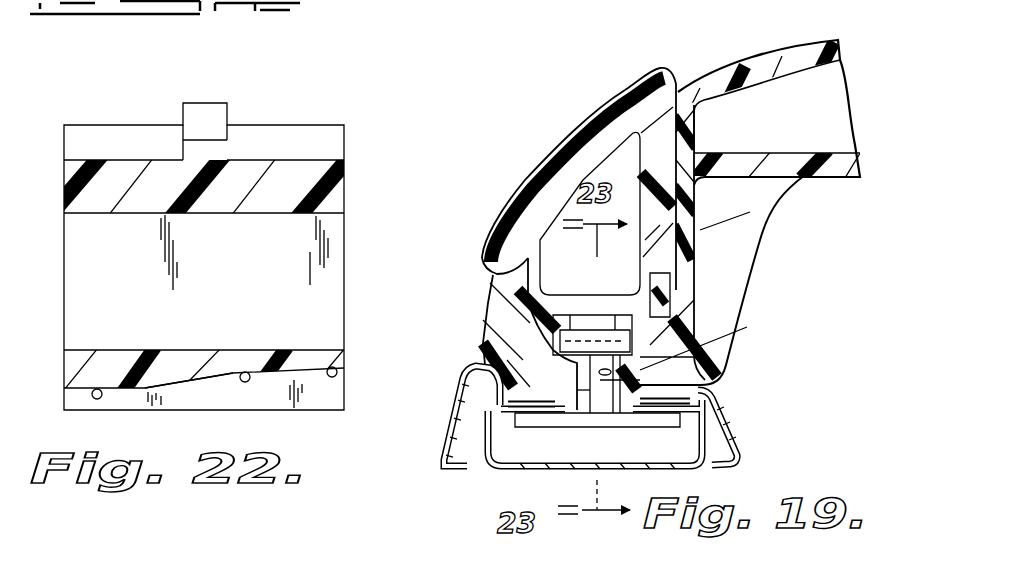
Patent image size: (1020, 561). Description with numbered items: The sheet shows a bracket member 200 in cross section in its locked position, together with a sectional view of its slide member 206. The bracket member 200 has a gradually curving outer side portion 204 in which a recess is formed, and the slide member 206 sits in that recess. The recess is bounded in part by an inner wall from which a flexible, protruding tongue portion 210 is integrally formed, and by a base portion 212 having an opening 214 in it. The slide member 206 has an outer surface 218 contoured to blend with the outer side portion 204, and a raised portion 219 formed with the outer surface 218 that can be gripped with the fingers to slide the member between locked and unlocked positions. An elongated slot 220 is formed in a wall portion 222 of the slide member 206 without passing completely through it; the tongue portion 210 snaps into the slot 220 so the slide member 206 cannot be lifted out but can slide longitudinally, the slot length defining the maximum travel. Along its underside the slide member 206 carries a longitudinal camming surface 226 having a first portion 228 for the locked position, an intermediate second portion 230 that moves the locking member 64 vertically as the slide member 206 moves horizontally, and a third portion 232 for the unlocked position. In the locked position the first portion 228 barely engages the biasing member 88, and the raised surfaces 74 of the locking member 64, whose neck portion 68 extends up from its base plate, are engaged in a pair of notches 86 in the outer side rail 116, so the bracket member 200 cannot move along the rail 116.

In FIG. 19, the locking member 64 is at (545, 428).
In FIG. 19, the neck portion 68 is at (548, 333).
In FIG. 19, the raised surfaces 74 is at (508, 403).
In FIG. 19, the notches 86 is at (520, 435).
In FIG. 19, the biasing member 88 is at (547, 330).
In FIG. 19, the outer side rail 116 is at (748, 436).
In FIG. 19, the bracket member 200 is at (568, 85).
In FIG. 19, the outer side portion 204 is at (752, 60).
In FIG. 22, the slide member 206 is at (112, 122).
In FIG. 19, the slide member 206 is at (526, 178).
In FIG. 19, the tongue portion 210 is at (703, 302).
In FIG. 19, the base portion 212 is at (670, 350).
In FIG. 19, the opening 214 is at (697, 363).
In FIG. 19, the outer surface 218 is at (556, 146).
In FIG. 19, the raised portion 219 is at (673, 78).
In FIG. 19, the elongated slot 220 is at (670, 286).
In FIG. 19, the wall portion 222 is at (710, 155).
In FIG. 22, the camming surface 226 is at (222, 389).
In FIG. 22, the first portion 228 is at (337, 371).
In FIG. 19, the first portion 228 is at (568, 316).
In FIG. 22, the second portion 230 is at (246, 372).
In FIG. 22, the third portion 232 is at (98, 389).